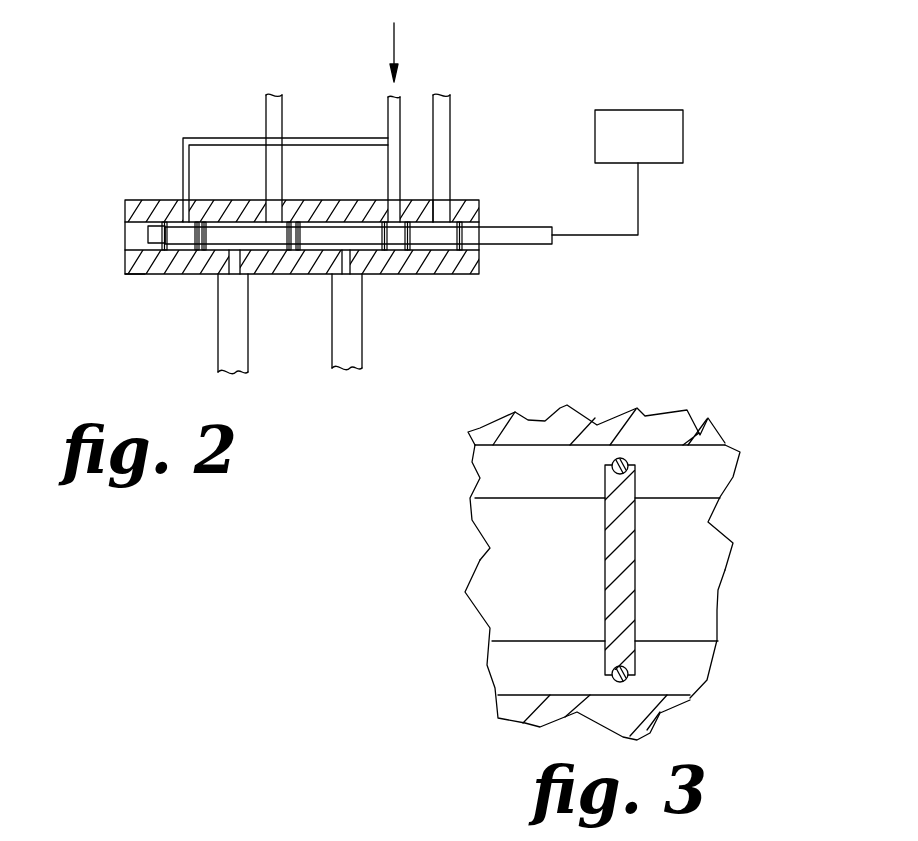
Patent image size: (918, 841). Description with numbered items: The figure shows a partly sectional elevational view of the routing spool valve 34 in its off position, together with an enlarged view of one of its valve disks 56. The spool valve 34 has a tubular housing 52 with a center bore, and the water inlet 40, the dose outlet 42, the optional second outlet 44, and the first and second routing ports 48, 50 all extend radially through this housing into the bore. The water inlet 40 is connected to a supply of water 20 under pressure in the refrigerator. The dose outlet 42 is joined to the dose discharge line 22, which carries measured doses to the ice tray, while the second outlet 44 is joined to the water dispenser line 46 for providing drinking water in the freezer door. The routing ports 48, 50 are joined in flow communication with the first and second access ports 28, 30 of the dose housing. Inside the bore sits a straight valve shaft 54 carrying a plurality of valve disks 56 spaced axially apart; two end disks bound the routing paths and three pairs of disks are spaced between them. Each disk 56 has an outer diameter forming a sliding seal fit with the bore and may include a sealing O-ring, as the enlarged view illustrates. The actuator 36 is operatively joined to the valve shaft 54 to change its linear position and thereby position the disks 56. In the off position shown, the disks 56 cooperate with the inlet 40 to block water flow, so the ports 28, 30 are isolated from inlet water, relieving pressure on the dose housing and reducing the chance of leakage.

In FIG. 2, the water 20 is at (391, 42).
In FIG. 2, the dose discharge line 22 is at (266, 120).
In FIG. 2, the first access port 28 is at (248, 332).
In FIG. 2, the second access port 30 is at (360, 348).
In FIG. 2, the spool valve 34 is at (132, 200).
In FIG. 2, the actuator 36 is at (672, 108).
In FIG. 2, the water inlet 40 is at (330, 138).
In FIG. 2, the dose outlet 42 is at (297, 198).
In FIG. 2, the second outlet 44 is at (457, 205).
In FIG. 2, the water dispenser line 46 is at (450, 115).
In FIG. 2, the first routing port 48 is at (215, 275).
In FIG. 2, the second routing port 50 is at (360, 272).
In FIG. 2, the tubular housing 52 is at (160, 218).
In FIG. 3, the tubular housing 52 is at (715, 427).
In FIG. 2, the valve shaft 54 is at (408, 275).
In FIG. 3, the valve shaft 54 is at (727, 567).
In FIG. 2, the valve disk 56 is at (130, 276).
In FIG. 3, the valve disk 56 is at (605, 570).